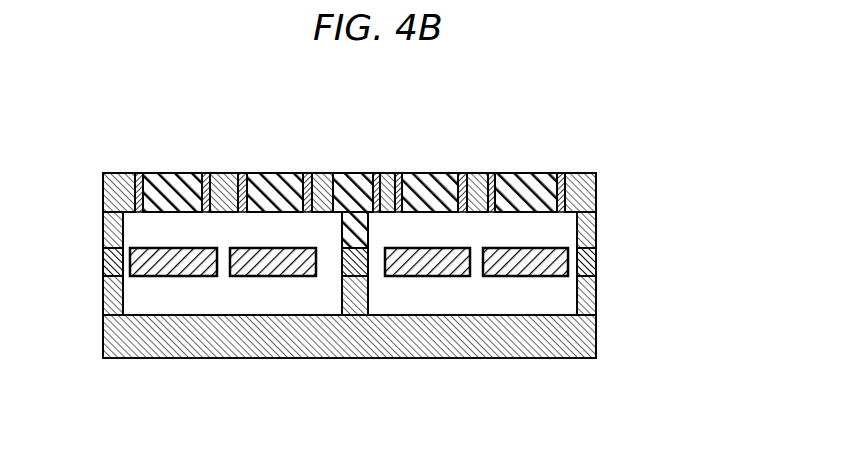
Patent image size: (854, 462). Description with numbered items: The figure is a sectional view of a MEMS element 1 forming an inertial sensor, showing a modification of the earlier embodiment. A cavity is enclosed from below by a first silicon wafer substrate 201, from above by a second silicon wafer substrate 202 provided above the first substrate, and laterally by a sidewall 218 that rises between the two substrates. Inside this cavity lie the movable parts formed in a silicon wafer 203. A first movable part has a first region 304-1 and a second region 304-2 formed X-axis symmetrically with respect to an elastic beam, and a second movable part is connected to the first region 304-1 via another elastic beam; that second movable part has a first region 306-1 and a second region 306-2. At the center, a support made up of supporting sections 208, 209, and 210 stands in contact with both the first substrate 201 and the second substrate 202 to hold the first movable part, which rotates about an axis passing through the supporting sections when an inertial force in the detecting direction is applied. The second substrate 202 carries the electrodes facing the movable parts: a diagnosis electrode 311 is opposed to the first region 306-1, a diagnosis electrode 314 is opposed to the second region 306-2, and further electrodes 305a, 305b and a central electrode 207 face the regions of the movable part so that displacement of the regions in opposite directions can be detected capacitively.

The MEMS element 1 is at (115, 135).
The first silicon wafer substrate 201 is at (583, 337).
The second silicon wafer substrate 202 is at (597, 185).
The silicon wafer 203 is at (597, 253).
The central electrode 207 is at (370, 173).
The supporting section 208 is at (357, 304).
The supporting section 209 is at (368, 277).
The supporting section 210 is at (343, 247).
The sidewall 218 is at (97, 215).
The first region 304-1 is at (257, 277).
The second region 304-2 is at (444, 277).
The first electrode 305a is at (262, 173).
The second electrode 305b is at (440, 173).
The first region 306-1 is at (155, 277).
The second region 306-2 is at (514, 277).
The diagnosis electrode 311 is at (172, 173).
The diagnosis electrode 314 is at (530, 173).